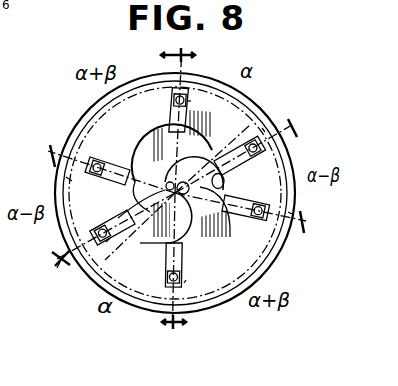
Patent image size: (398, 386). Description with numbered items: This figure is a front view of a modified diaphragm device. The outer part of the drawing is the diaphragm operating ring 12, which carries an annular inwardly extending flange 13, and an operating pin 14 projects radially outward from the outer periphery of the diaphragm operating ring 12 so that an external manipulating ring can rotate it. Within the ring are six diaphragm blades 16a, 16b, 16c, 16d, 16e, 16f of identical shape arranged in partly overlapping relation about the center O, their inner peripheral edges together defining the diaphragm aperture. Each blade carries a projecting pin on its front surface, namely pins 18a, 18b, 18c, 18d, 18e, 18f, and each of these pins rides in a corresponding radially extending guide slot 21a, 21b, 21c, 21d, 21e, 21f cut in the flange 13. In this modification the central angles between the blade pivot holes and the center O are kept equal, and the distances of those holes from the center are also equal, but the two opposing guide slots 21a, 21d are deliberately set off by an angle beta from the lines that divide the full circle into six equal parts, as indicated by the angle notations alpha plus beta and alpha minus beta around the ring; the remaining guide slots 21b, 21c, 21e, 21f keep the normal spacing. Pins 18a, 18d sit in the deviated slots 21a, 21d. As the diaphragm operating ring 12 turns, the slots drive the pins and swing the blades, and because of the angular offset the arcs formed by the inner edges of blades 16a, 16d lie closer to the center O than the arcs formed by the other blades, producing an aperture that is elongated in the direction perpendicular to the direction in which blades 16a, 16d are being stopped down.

The diaphragm operating ring 12 is at (256, 103).
The annular inwardly extending flange 13 is at (220, 145).
The operating pin 14 is at (57, 268).
The diaphragm blade 16a is at (126, 190).
The diaphragm blade 16b is at (148, 142).
The diaphragm blade 16c is at (238, 152).
The diaphragm blade 16d is at (254, 198).
The diaphragm blade 16e is at (192, 243).
The diaphragm blade 16f is at (163, 252).
The projecting pin 18a is at (92, 130).
The projecting pin 18b is at (175, 102).
The projecting pin 18c is at (295, 160).
The projecting pin 18d is at (286, 243).
The projecting pin 18e is at (157, 306).
The projecting pin 18f is at (100, 230).
The guide slot 21a is at (68, 177).
The guide slot 21b is at (189, 102).
The guide slot 21c is at (262, 128).
The guide slot 21d is at (289, 212).
The guide slot 21e is at (184, 283).
The guide slot 21f is at (106, 242).